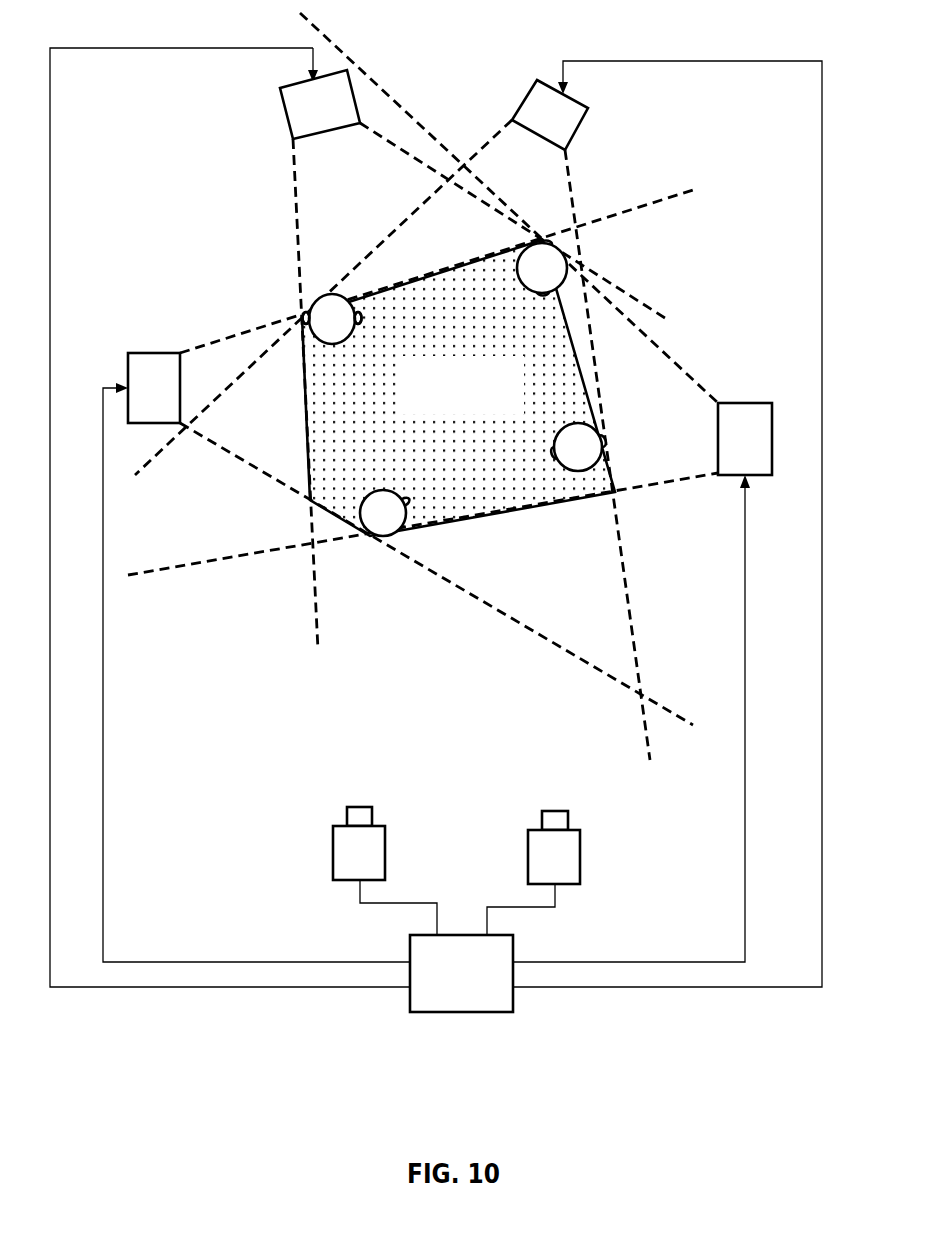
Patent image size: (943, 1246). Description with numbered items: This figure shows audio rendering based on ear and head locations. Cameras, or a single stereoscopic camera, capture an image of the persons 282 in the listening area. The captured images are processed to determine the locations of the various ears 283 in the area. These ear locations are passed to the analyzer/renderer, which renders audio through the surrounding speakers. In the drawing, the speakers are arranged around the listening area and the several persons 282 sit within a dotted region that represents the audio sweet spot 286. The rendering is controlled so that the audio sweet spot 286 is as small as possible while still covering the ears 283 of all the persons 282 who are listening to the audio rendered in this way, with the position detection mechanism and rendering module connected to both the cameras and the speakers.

The person 282 is at (377, 540).
The ears 283 is at (302, 317).
The audio sweet spot 286 is at (507, 502).